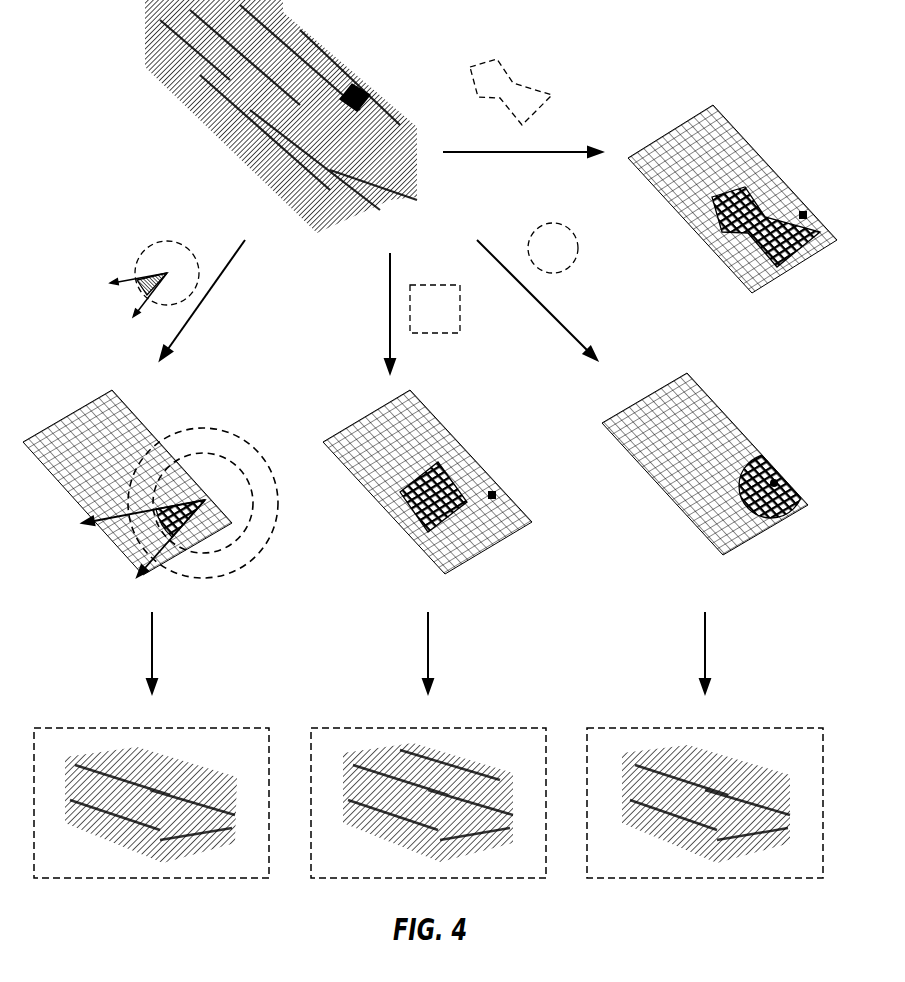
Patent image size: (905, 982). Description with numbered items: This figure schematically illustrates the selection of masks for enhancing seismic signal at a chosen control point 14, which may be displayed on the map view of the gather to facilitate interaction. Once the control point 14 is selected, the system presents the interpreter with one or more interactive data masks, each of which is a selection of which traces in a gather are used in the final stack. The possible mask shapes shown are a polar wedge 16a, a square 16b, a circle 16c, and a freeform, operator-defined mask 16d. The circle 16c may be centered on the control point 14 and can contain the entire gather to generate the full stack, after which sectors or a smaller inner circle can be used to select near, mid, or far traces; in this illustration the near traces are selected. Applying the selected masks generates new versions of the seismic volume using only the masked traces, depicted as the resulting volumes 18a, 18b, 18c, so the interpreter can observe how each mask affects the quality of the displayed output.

The control point 14 is at (363, 88).
The polar wedge mask 16a is at (165, 242).
The square mask 16b is at (438, 285).
The circle mask 16c is at (552, 223).
The freeform mask 16d is at (522, 90).
The sampled voxel volume from cone kernel 18a is at (108, 728).
The sampled voxel volume from square kernel 18b is at (385, 727).
The sampled voxel volume from circular kernel 18c is at (660, 727).